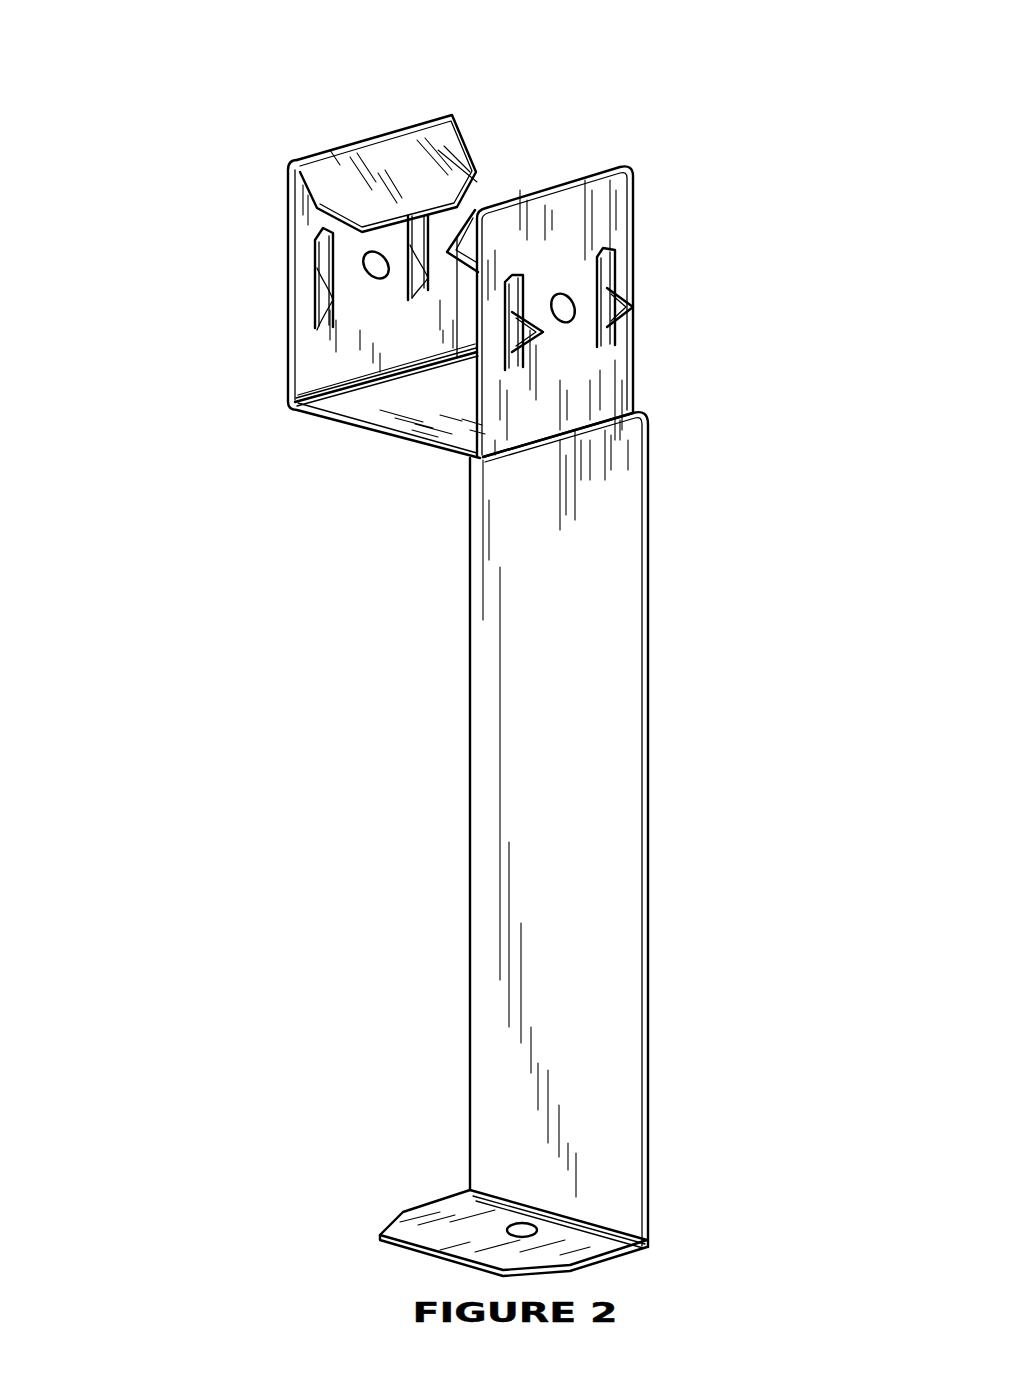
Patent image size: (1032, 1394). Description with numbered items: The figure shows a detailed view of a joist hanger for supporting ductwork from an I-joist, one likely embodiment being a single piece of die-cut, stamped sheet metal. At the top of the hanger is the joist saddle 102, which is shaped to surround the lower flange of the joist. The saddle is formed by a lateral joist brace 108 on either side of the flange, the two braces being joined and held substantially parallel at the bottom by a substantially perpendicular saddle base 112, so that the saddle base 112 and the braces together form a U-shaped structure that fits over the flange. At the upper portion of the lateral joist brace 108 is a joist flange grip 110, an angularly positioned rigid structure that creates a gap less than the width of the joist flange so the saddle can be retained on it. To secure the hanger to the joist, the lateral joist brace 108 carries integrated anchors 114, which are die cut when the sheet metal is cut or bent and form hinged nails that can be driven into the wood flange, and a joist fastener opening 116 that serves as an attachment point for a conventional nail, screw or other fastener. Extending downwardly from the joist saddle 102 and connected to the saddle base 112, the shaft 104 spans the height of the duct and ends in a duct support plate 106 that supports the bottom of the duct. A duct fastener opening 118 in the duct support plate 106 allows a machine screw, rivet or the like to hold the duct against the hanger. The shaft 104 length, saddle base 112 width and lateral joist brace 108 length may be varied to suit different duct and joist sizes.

The joist saddle 102 is at (225, 460).
The shaft 104 is at (487, 740).
The duct support plate 106 is at (449, 1212).
The lateral joist brace 108 is at (598, 200).
The joist flange grip 110 is at (333, 167).
The saddle base 112 is at (375, 418).
The integrated anchor 114 is at (820, 253).
The joist fastener opening 116 is at (566, 320).
The duct fastener opening 118 is at (540, 1222).